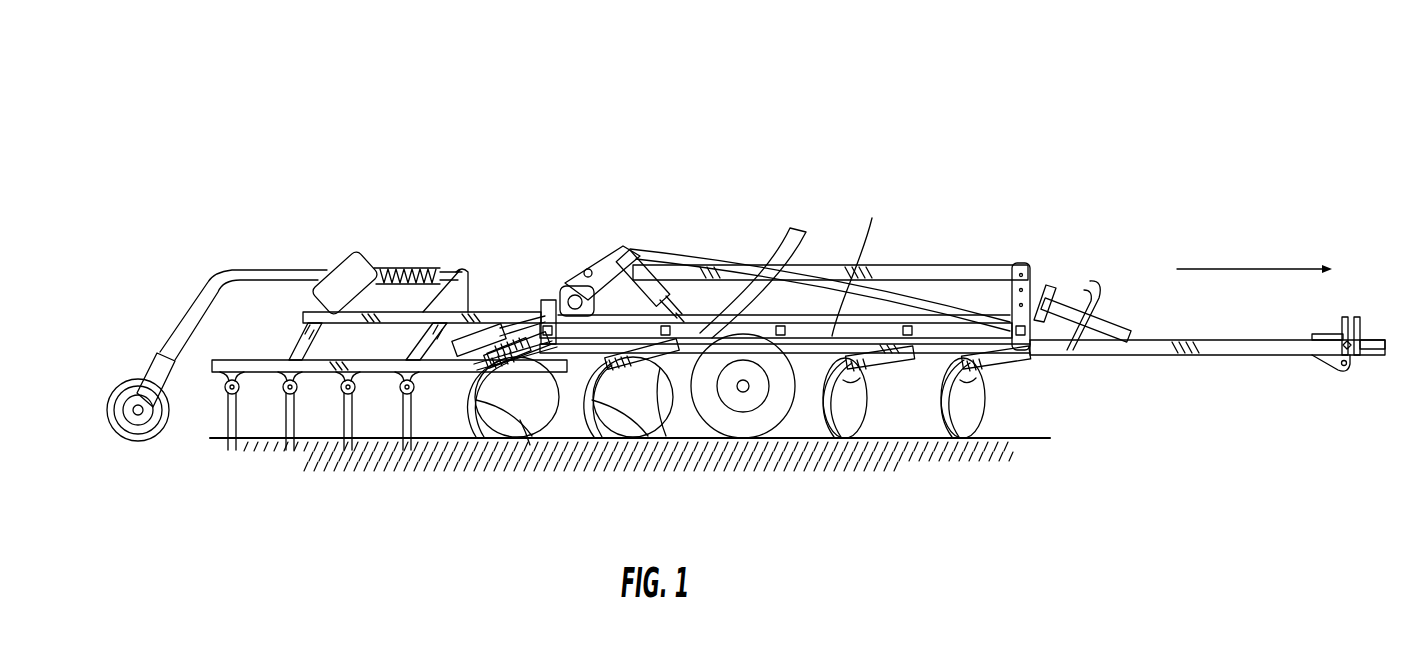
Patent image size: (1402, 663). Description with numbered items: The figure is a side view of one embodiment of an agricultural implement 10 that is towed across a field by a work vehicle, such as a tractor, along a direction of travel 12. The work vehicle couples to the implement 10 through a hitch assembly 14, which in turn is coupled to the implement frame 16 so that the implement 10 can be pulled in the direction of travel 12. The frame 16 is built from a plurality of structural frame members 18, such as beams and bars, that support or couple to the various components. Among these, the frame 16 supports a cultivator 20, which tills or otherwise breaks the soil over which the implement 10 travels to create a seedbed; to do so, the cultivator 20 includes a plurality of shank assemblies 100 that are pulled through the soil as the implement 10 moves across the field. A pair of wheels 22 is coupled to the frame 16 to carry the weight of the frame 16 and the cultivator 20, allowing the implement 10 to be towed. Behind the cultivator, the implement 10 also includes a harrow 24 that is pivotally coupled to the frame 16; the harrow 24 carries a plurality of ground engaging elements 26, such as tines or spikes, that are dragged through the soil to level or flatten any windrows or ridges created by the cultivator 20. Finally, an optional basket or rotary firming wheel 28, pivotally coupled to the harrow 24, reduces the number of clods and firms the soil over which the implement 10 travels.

The agricultural implement 10 is at (262, 146).
The direction of travel 12 is at (1255, 268).
The hitch assembly 14 is at (1250, 355).
The frame 16 is at (970, 250).
The structural frame members 18 is at (796, 229).
The cultivator 20 is at (1055, 427).
The wheels 22 is at (712, 417).
The harrow 24 is at (486, 252).
The ground engaging elements 26 is at (232, 450).
The basket 28 is at (208, 250).
The shank assemblies 100 is at (849, 383).